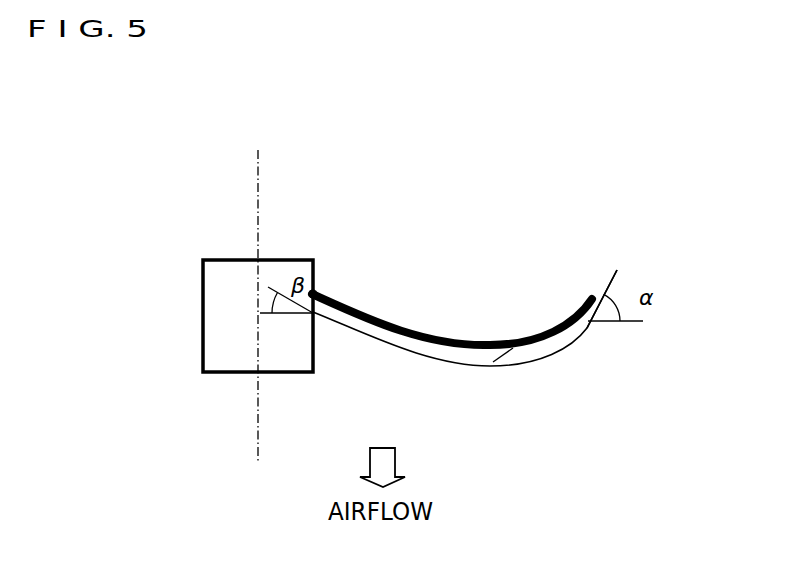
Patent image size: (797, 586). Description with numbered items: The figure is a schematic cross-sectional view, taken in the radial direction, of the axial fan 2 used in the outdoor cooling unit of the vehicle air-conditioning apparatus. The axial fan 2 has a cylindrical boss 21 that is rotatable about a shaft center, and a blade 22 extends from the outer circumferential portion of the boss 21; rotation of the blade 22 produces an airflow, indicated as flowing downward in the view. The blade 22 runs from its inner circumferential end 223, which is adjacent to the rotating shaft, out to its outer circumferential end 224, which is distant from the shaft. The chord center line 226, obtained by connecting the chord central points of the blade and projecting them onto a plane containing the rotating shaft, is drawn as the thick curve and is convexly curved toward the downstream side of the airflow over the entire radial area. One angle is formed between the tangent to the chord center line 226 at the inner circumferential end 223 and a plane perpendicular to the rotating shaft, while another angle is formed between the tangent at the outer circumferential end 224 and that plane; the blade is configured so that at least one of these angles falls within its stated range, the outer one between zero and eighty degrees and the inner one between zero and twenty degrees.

The axial fan 2 is at (260, 521).
The boss 21 is at (228, 287).
The blade 22 is at (428, 335).
The inner circumferential end 223 is at (313, 292).
The outer circumferential end 224 is at (597, 290).
The chord center line 226 is at (517, 337).